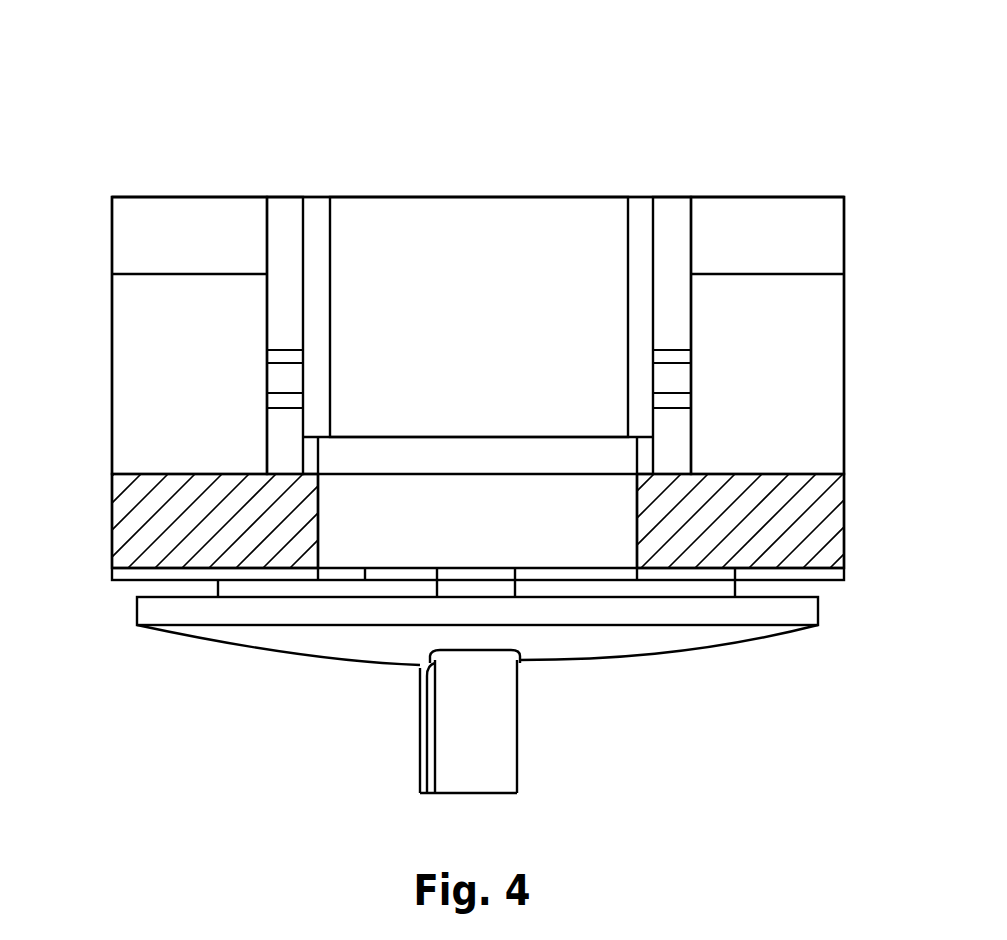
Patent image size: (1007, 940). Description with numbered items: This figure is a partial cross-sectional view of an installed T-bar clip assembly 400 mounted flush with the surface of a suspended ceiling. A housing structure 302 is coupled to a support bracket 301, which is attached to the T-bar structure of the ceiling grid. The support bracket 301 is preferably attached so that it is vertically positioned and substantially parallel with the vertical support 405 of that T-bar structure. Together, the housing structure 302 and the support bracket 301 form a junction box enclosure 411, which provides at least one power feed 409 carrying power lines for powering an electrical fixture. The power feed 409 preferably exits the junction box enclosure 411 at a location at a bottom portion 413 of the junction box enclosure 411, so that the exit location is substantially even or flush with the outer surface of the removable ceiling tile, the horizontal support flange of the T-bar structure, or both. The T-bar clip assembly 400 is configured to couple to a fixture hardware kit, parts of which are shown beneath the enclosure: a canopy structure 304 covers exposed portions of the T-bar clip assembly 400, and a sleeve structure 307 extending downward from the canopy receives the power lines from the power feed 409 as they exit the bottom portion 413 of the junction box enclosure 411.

The T-bar clip assembly 400 is at (113, 128).
The support bracket 301 is at (676, 237).
The housing structure 302 is at (563, 218).
The canopy structure 304 is at (606, 643).
The sleeve structure 307 is at (485, 752).
The vertical support 405 is at (822, 327).
The power feed 409 is at (822, 522).
The junction box enclosure 411 is at (498, 332).
The bottom portion 413 is at (365, 580).